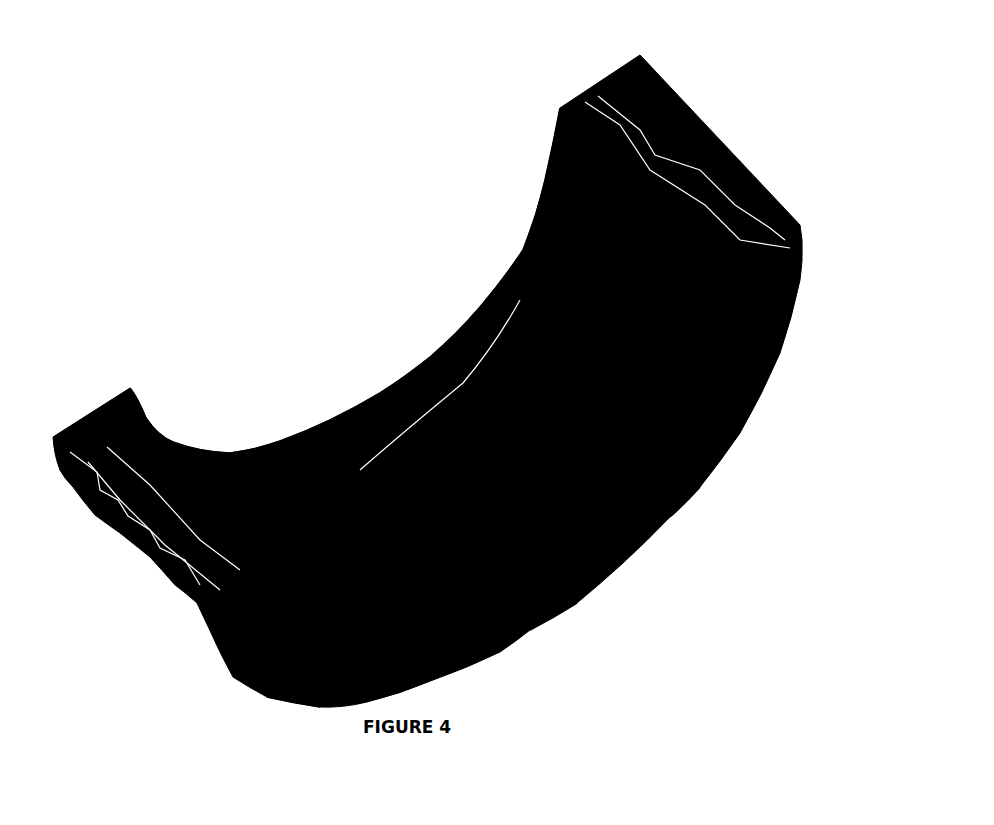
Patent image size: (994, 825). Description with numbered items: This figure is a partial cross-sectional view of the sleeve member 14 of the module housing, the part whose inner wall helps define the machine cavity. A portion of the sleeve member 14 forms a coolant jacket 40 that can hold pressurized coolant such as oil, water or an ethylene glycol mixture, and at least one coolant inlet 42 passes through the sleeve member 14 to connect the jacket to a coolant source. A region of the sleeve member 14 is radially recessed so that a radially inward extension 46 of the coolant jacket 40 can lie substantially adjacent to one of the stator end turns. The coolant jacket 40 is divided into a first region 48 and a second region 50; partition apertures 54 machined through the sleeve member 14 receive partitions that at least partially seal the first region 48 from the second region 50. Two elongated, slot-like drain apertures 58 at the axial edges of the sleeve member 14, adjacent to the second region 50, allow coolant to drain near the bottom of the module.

The sleeve member 14 is at (522, 137).
The coolant jacket 40 is at (177, 588).
The coolant inlet 42 is at (127, 540).
The radially inward extension 46 is at (105, 397).
The first region 48 is at (230, 450).
The second region 50 is at (470, 280).
The partition apertures 54 is at (672, 517).
The drain apertures 58 is at (383, 388).